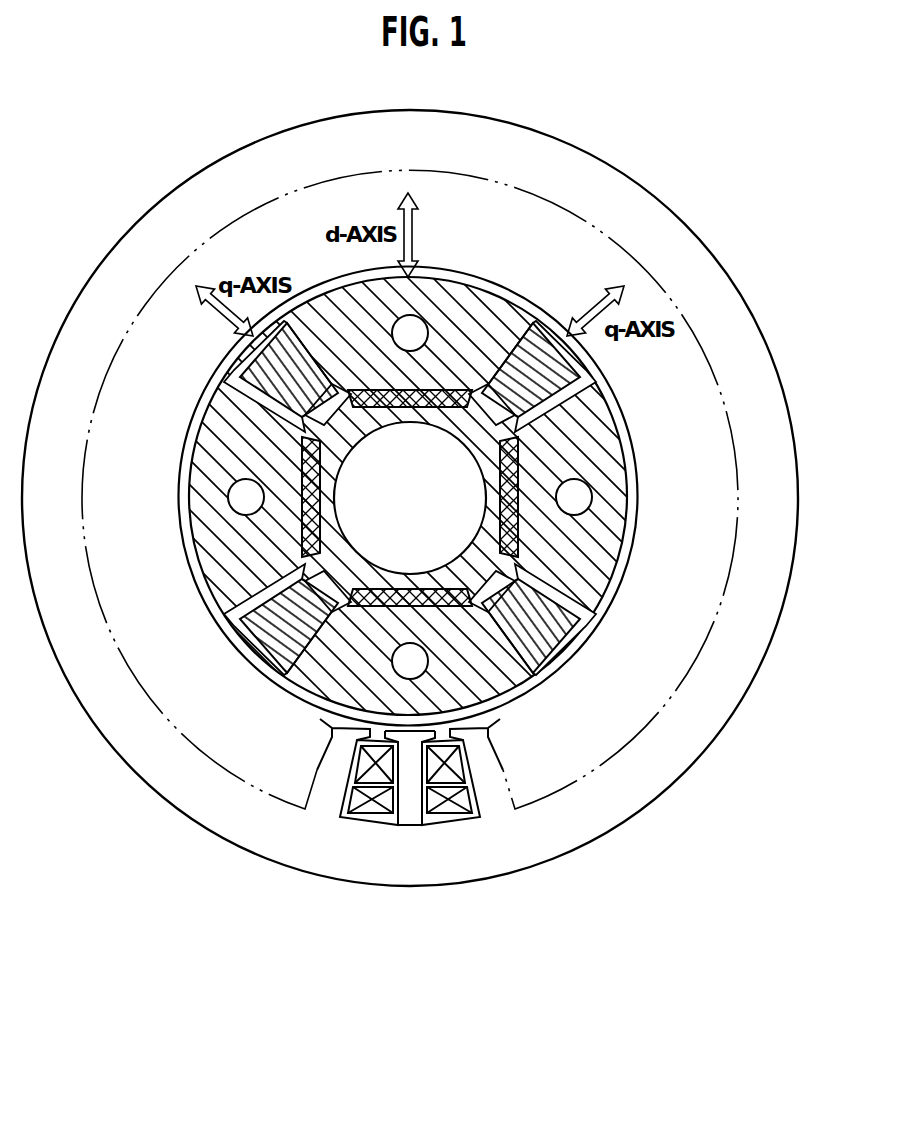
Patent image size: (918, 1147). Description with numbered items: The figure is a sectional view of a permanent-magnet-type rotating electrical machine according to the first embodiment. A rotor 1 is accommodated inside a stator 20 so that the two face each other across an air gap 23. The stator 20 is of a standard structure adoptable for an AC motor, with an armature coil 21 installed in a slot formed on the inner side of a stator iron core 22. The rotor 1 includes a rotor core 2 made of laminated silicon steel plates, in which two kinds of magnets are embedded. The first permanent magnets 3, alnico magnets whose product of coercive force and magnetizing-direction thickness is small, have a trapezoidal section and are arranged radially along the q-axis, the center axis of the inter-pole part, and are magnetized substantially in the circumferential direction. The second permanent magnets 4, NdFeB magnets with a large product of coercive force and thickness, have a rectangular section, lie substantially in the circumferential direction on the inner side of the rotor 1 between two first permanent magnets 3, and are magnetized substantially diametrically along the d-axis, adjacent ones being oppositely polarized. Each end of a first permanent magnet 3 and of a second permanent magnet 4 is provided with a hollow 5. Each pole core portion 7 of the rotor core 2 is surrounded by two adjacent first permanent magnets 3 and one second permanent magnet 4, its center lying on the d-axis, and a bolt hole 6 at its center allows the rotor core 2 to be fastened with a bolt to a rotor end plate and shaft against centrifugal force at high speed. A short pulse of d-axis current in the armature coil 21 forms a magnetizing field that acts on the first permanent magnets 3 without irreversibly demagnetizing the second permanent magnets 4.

The rotor 1 is at (203, 406).
The rotor core 2 is at (215, 545).
The first permanent magnet 3 is at (237, 380).
The second permanent magnet 4 is at (462, 388).
The hollow 5 is at (567, 338).
The bolt hole 6 is at (233, 497).
The pole core portion 7 is at (355, 302).
The stator 20 is at (628, 828).
The armature coil 21 is at (450, 820).
The stator iron core 22 is at (668, 752).
The air gap 23 is at (633, 533).